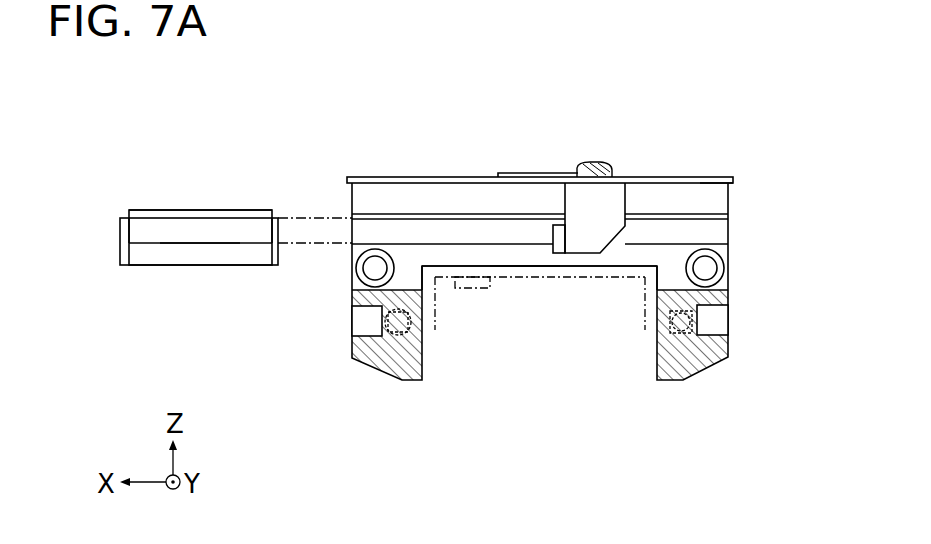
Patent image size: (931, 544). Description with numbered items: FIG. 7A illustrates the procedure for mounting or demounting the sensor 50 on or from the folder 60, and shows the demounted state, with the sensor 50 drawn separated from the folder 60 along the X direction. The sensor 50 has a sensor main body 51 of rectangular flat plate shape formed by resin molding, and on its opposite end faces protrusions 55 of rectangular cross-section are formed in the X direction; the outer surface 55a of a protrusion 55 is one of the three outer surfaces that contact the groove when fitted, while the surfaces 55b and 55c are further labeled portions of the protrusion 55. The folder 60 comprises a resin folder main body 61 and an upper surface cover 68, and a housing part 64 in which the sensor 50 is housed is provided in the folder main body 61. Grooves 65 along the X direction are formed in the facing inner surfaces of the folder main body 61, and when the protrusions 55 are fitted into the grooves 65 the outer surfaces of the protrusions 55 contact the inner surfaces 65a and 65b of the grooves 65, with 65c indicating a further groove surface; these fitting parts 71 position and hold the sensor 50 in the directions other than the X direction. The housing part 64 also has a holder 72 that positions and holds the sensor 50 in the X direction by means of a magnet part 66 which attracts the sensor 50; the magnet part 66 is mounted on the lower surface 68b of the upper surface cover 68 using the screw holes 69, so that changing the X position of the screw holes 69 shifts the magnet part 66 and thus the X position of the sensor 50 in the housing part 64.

The sensor 50 is at (236, 283).
The sensor main body 51 is at (170, 257).
The protrusions 55 is at (303, 138).
The outer surface 55a is at (142, 218).
The second engaging part 55b is at (193, 245).
The third engaging part 55c is at (252, 227).
The folder 60 is at (540, 344).
The folder main body 61 is at (627, 372).
The housing part 64 is at (391, 190).
The grooves 65 is at (593, 438).
The inner surface 65a is at (535, 218).
The inner surface 65b is at (497, 238).
The third groove portion 65c is at (438, 229).
The magnet part 66 is at (633, 168).
The upper surface cover 68 is at (452, 177).
The lower surface 68b is at (700, 184).
The screw holes 69 is at (585, 162).
The fitting parts 71 is at (311, 274).
The holder 72 is at (613, 205).